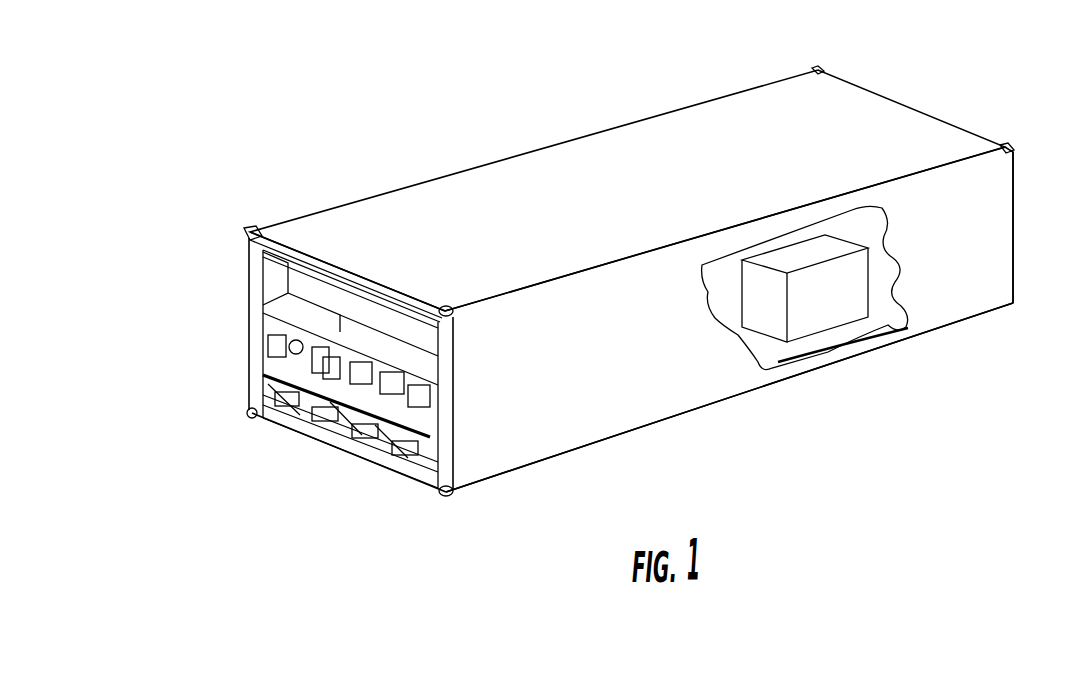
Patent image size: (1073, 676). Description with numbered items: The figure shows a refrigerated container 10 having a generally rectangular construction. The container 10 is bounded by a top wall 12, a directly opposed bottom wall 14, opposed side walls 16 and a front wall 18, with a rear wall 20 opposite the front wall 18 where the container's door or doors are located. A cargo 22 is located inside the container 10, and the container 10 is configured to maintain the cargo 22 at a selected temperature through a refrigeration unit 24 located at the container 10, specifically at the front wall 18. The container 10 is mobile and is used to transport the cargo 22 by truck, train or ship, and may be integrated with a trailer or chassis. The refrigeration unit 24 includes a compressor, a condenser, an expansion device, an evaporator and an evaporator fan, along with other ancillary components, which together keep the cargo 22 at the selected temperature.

The refrigerated container 10 is at (372, 103).
The top wall 12 is at (555, 160).
The bottom wall 14 is at (667, 424).
The side walls 16 is at (743, 380).
The front wall 18 is at (248, 256).
The rear wall 20 is at (999, 232).
The cargo 22 is at (805, 287).
The refrigeration unit 24 is at (323, 440).